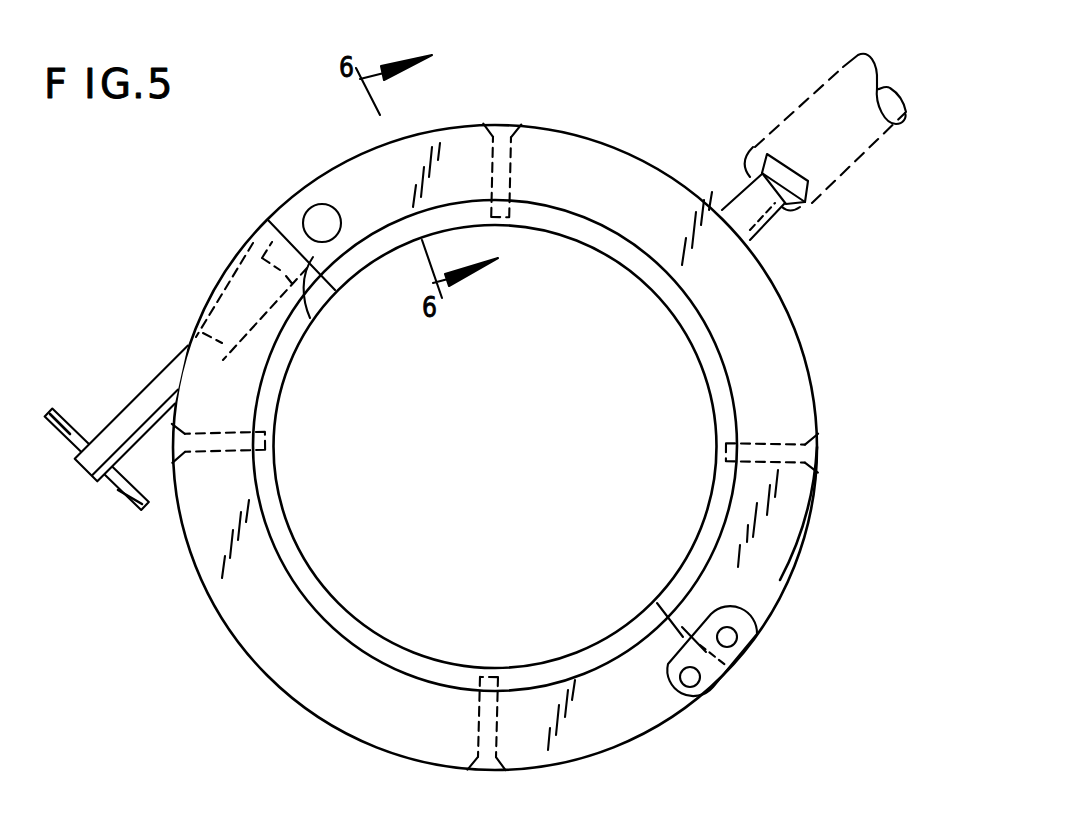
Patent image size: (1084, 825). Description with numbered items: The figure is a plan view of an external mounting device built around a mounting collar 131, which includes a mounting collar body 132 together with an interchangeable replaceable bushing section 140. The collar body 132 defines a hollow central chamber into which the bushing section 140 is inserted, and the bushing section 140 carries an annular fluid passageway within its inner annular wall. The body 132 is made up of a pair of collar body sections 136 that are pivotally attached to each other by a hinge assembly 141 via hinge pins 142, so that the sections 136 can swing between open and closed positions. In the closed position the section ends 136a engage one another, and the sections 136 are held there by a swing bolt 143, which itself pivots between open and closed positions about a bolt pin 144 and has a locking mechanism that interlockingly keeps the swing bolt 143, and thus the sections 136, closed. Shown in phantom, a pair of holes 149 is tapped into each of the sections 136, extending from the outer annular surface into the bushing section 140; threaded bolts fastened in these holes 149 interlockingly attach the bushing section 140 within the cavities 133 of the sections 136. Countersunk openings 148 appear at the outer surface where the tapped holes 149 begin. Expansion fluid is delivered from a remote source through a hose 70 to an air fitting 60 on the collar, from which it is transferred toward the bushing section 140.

The mounting collar 131 is at (806, 312).
The mounting collar body 132 is at (800, 535).
The cavities 133 is at (515, 500).
The collar body sections 136 is at (752, 262).
The section ends 136a is at (343, 245).
The bushing section 140 is at (291, 551).
The hinge assembly 141 is at (692, 697).
The hinge pins 142 is at (700, 677).
The swing bolt 143 is at (120, 411).
The bolt pin 144 is at (312, 213).
The countersunk holes 148 is at (510, 123).
The holes 149 is at (512, 169).
The air fitting 60 is at (790, 150).
The hose 70 is at (823, 80).